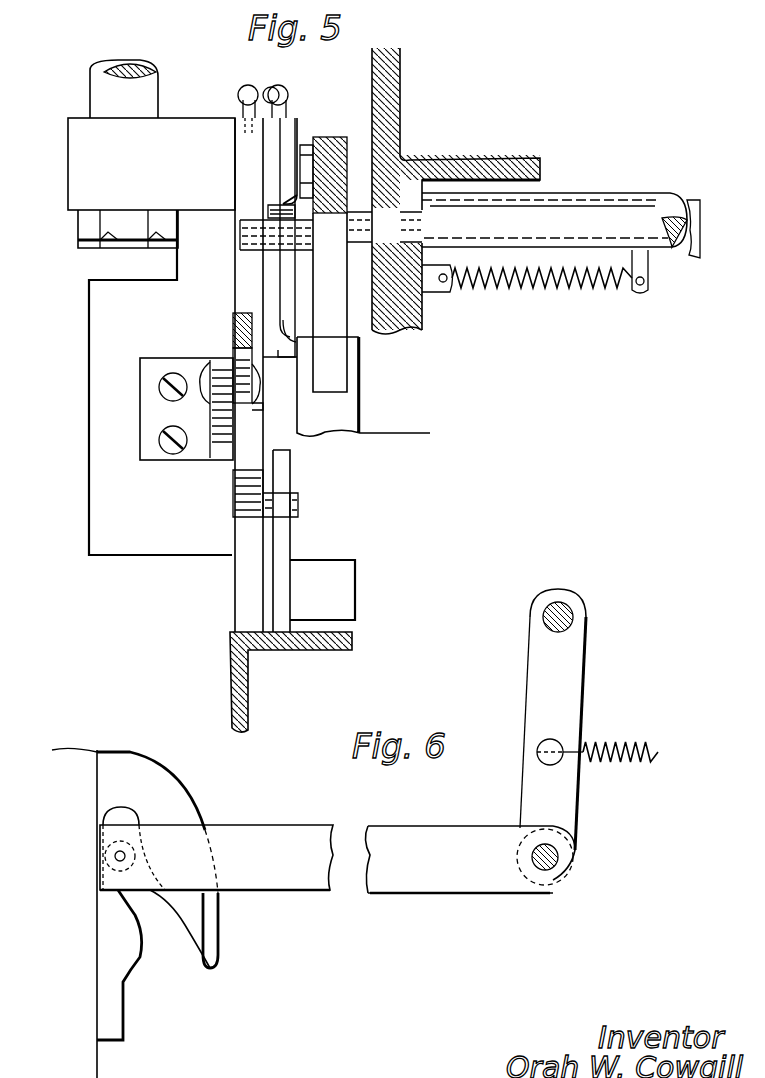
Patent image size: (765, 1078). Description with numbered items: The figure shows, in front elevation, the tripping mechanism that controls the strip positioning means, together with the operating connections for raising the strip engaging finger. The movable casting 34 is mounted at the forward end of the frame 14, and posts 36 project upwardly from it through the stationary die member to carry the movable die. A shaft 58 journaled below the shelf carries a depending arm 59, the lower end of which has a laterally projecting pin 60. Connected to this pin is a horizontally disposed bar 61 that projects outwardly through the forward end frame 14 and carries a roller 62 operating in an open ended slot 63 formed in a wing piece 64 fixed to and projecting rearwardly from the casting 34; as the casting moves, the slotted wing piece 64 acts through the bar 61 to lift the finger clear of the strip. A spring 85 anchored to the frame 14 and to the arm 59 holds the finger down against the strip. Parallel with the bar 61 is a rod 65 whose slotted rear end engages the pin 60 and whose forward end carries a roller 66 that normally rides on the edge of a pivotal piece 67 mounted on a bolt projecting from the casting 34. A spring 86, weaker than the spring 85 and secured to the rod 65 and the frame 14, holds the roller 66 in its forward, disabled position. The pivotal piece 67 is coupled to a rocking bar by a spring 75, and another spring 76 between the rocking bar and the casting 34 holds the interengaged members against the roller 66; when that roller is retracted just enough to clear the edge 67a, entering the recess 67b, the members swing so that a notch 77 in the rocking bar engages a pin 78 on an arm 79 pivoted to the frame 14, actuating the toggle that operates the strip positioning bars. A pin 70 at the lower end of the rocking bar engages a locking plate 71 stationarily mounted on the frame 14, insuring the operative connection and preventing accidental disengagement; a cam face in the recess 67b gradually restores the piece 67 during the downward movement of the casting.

In FIG. 5, the frame 14 is at (398, 82).
In FIG. 5, the casting 34 is at (89, 325).
In FIG. 6, the casting 34 is at (80, 758).
In FIG. 5, the posts 36 is at (97, 79).
In FIG. 6, the shaft 58 is at (566, 622).
In FIG. 6, the depending arm 59 is at (562, 684).
In FIG. 6, the pin 60 is at (556, 863).
In FIG. 5, the bar 61 is at (572, 196).
In FIG. 6, the roller 62 is at (107, 855).
In FIG. 6, the open ended slot 63 is at (172, 920).
In FIG. 6, the wing piece 64 is at (185, 812).
In FIG. 5, the rod 65 is at (634, 215).
In FIG. 5, the roller 66 is at (272, 204).
In FIG. 5, the pivotal piece 67 is at (276, 358).
In FIG. 5, the edge 67a is at (268, 288).
In FIG. 5, the recess 67b is at (285, 312).
In FIG. 5, the pin 70 is at (298, 505).
In FIG. 5, the plate 71 is at (283, 548).
In FIG. 5, the spring 75 is at (279, 86).
In FIG. 5, the spring 76 is at (246, 85).
In FIG. 5, the notch 77 is at (256, 410).
In FIG. 5, the pin 78 is at (246, 236).
In FIG. 5, the arm 79 is at (323, 264).
In FIG. 6, the spring 85 is at (636, 766).
In FIG. 5, the spring 86 is at (563, 292).